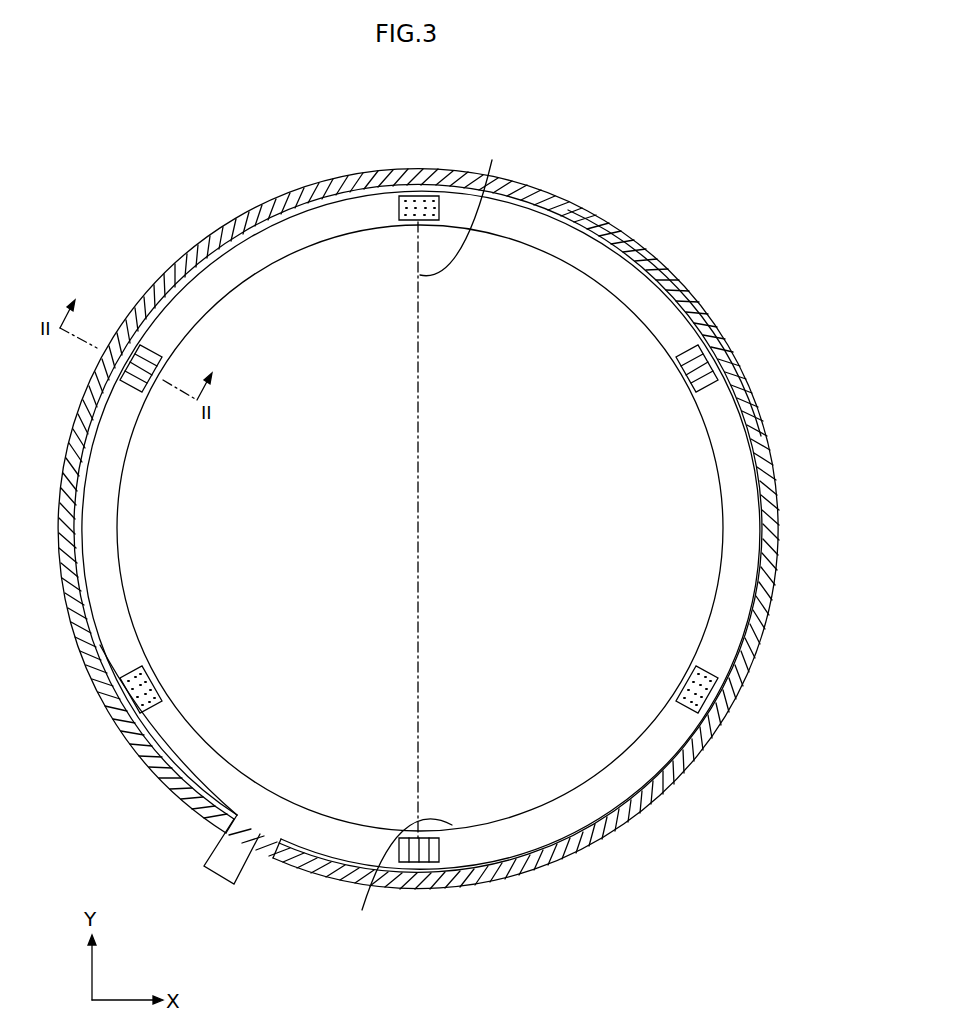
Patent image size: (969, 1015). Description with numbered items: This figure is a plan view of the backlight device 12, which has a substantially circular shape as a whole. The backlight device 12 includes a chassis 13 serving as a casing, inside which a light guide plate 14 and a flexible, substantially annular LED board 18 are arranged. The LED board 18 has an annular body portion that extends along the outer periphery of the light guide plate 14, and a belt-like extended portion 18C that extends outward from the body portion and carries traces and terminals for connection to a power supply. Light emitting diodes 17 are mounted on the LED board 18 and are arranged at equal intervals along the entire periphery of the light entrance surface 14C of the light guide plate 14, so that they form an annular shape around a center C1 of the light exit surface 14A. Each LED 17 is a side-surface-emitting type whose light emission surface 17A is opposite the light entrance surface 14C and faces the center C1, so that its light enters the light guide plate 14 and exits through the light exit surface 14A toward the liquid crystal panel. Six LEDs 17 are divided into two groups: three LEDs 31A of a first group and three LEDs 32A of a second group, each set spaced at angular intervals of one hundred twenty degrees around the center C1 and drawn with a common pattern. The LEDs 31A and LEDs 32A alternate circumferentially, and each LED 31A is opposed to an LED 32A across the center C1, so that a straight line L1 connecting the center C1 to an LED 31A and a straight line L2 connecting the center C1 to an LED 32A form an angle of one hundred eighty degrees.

The backlight device 12 is at (283, 164).
The chassis 13 is at (214, 236).
The light guide plate 14 is at (622, 777).
The light exit surface 14A is at (556, 797).
The light entrance surface 14C is at (490, 823).
The light emitting diode 17 is at (125, 395).
The light emission surface 17A is at (147, 383).
The LED board 18 is at (290, 830).
The extended portion 18C is at (223, 855).
The LED of the first LED group 31A is at (151, 345).
The LED of the second LED group 32A is at (418, 196).
The center of the light exit surface C1 is at (420, 523).
The straight line connecting the center and the first LED L1 is at (400, 879).
The straight line connecting the center and the second LED L2 is at (461, 205).